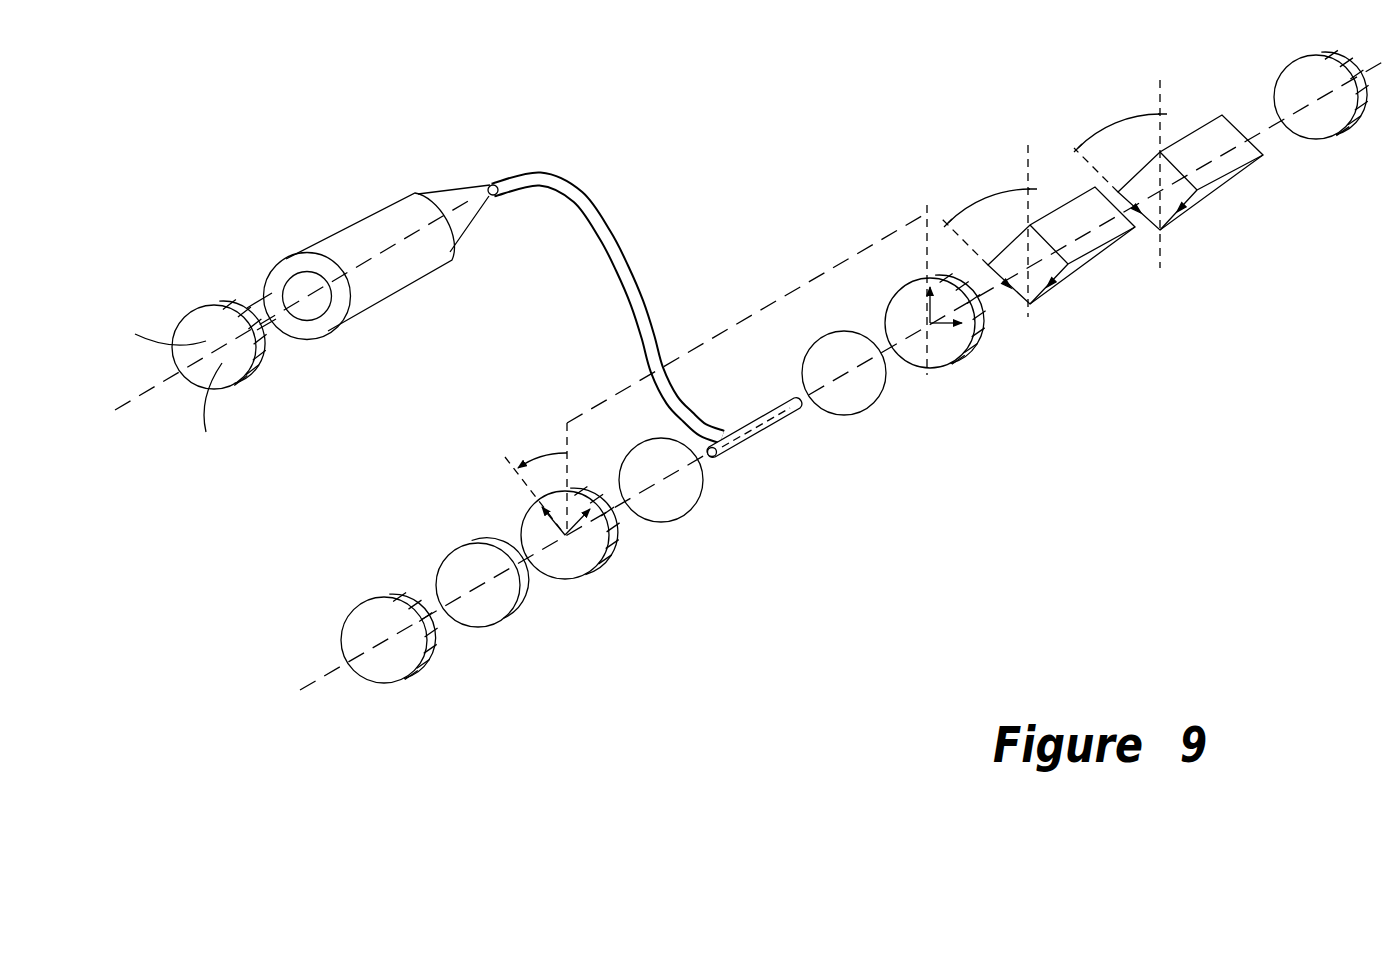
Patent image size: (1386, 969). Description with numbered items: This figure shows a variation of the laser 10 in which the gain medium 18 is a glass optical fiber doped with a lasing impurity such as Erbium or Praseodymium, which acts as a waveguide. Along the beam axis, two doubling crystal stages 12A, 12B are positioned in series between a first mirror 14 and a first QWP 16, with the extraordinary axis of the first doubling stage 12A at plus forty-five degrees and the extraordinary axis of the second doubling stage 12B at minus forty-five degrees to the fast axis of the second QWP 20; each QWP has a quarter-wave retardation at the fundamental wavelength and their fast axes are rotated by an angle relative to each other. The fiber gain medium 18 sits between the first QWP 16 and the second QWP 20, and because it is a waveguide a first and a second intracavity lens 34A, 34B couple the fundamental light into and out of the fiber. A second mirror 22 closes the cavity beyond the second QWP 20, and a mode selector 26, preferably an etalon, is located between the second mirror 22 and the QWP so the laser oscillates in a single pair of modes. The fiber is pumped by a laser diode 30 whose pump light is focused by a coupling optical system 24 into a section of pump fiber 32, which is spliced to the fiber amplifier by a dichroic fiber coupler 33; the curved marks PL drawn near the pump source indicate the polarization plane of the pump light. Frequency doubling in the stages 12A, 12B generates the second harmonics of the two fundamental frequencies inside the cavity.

The laser 10 is at (133, 128).
The first doubling crystal stage 12A is at (1038, 222).
The second doubling crystal stage 12B is at (1168, 160).
The first mirror 14 is at (1321, 110).
The first QWP 16 is at (935, 287).
The gain medium 18 is at (754, 437).
The second QWP 20 is at (564, 495).
The second mirror 22 is at (394, 647).
The light source / collimator housing 24 is at (377, 262).
The mode selector 26 is at (482, 595).
The pump source 30 is at (205, 362).
The pump fiber 32 is at (616, 218).
The dichroic fiber coupler 33 is at (699, 401).
The first intracavity lens 34A is at (661, 498).
The second intracavity lens 34B is at (844, 391).
The plane of polarization PL is at (258, 303).